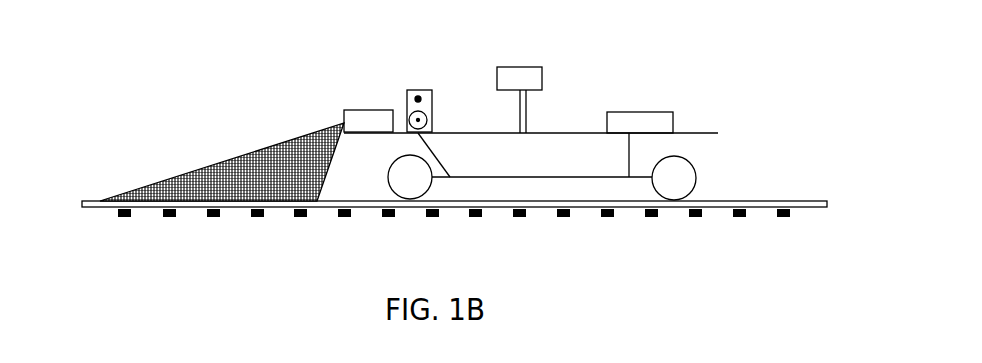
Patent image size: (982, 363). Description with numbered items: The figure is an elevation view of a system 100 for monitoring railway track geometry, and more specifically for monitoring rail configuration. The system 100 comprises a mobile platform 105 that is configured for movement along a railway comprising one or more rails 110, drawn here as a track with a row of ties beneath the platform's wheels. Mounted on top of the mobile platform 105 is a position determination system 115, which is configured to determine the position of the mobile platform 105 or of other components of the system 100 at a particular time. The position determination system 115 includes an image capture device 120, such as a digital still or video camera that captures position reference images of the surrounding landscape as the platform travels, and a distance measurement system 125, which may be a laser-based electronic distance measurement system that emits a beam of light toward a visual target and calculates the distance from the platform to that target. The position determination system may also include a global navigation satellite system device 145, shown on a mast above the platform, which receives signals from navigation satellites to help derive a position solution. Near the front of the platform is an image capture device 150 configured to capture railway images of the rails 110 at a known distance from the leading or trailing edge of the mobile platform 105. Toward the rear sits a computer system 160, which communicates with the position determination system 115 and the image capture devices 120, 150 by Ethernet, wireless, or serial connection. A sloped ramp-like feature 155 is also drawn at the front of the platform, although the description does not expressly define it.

The system 100 is at (217, 42).
The mobile platform 105 is at (700, 133).
The rails 110 is at (773, 201).
The position determination system 115 is at (418, 90).
The image capture device 120 is at (423, 99).
The distance measurement system 125 is at (428, 120).
The global navigation satellite system device 145 is at (520, 67).
The image capture device 150 is at (360, 110).
The ramp 155 is at (278, 143).
The computer system 160 is at (640, 112).